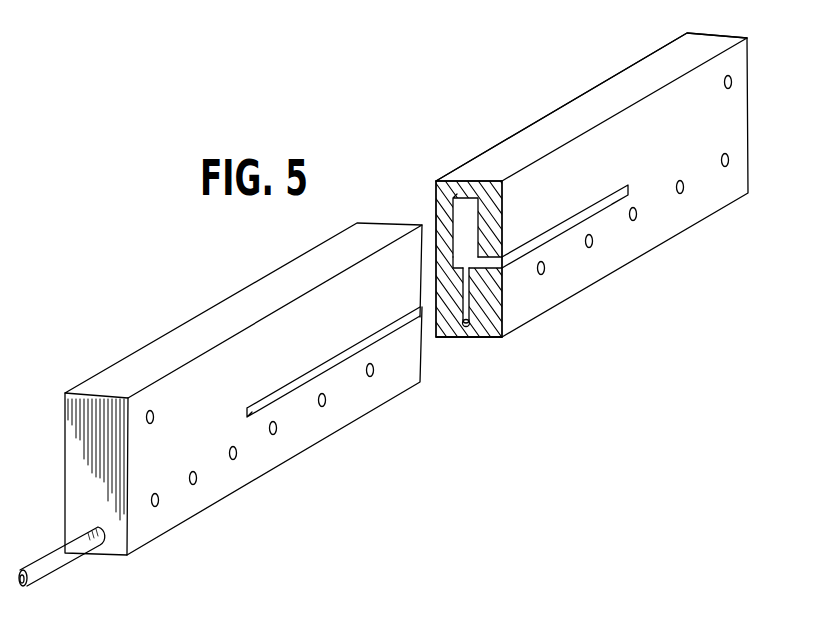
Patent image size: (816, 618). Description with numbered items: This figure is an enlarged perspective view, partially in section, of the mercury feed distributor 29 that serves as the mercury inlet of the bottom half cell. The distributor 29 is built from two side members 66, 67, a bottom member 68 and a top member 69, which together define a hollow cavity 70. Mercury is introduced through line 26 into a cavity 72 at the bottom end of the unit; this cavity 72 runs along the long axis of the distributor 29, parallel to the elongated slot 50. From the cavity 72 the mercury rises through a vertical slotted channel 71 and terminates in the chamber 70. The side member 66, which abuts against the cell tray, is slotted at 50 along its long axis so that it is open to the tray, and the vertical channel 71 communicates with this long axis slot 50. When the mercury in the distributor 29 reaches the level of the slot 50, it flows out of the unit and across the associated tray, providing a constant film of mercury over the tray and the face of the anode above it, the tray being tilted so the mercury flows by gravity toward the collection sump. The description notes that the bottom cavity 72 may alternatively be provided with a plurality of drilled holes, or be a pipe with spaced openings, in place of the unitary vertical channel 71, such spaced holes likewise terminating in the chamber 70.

The mercury feed distributor 29 is at (78, 466).
The line 26 is at (60, 562).
The elongated slot 50 is at (377, 337).
The side member 66 is at (741, 105).
The side member 67 is at (437, 199).
The bottom member 68 is at (488, 338).
The top member 69 is at (512, 143).
The hollow cavity 70 is at (468, 207).
The slotted channel 71 is at (460, 281).
The cavity 72 is at (466, 332).